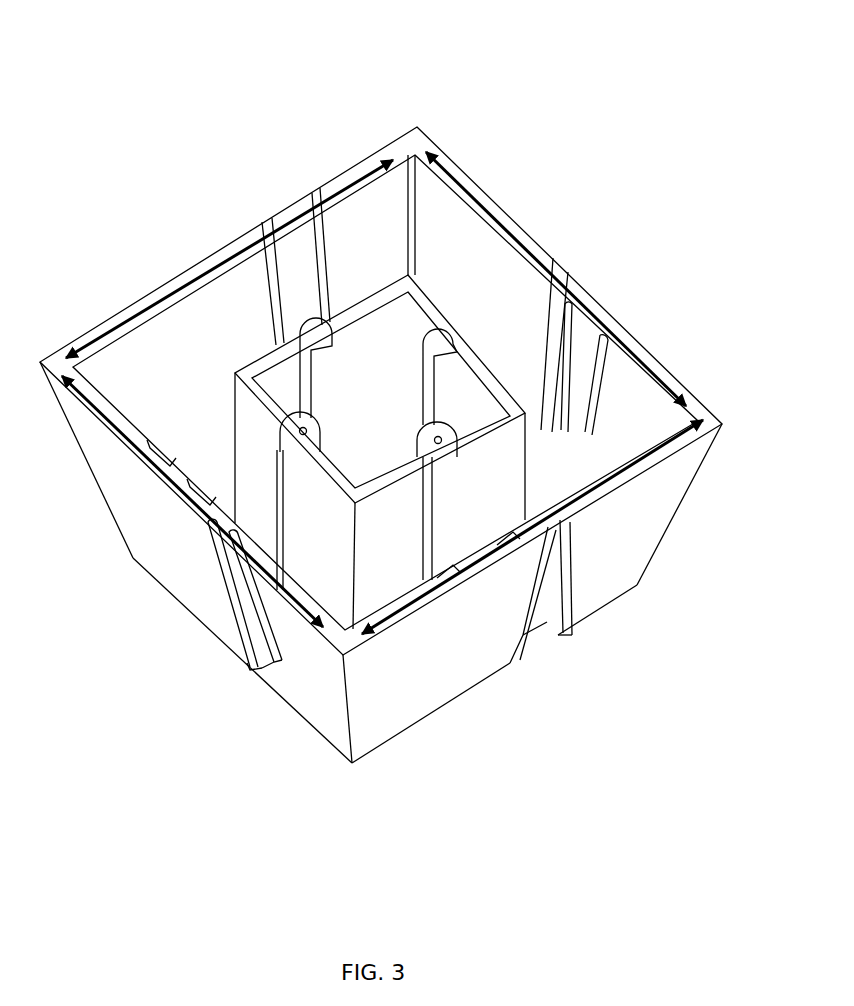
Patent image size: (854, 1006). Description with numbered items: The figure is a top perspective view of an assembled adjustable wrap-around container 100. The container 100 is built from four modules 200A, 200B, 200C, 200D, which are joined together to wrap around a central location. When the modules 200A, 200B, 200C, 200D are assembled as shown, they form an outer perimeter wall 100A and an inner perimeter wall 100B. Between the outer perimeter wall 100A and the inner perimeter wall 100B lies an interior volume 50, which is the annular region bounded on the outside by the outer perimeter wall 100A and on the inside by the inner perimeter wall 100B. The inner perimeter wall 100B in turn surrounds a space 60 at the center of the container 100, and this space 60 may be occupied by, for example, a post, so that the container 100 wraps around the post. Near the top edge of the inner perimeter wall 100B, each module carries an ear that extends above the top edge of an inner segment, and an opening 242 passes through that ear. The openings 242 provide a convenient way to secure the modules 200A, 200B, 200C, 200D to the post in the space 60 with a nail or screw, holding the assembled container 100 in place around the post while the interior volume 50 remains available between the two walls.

The adjustable wrap-around container 100 is at (492, 128).
The interior volume 50 is at (211, 335).
The space 60 is at (378, 345).
The module 200A is at (137, 508).
The module 200B is at (497, 248).
The module 200C is at (594, 600).
The module 200D is at (432, 697).
The outer perimeter wall 100A is at (318, 680).
The inner perimeter wall 100B is at (318, 540).
The opening 242 is at (450, 341).